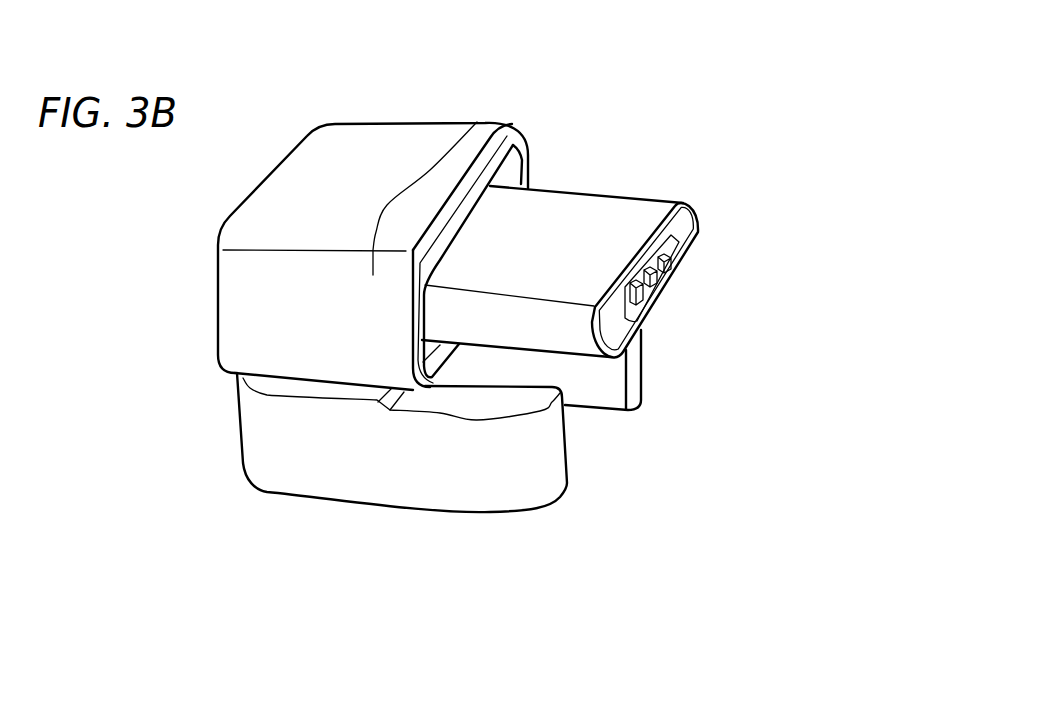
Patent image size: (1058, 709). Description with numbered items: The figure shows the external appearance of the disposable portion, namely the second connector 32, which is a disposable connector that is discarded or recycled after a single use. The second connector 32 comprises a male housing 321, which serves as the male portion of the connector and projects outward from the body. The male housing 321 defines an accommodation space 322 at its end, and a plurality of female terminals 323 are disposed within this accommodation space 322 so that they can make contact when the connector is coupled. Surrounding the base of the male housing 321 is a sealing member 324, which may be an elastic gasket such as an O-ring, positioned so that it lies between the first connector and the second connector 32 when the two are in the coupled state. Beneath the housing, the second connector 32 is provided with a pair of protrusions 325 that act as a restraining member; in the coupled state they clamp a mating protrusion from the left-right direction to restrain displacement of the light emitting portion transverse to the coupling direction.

The second connector 32 is at (378, 80).
The male housing 321 is at (612, 207).
The accommodation space 322 is at (681, 253).
The female terminals 323 is at (656, 274).
The sealing member 324 is at (507, 145).
The protrusions 325 is at (612, 400).